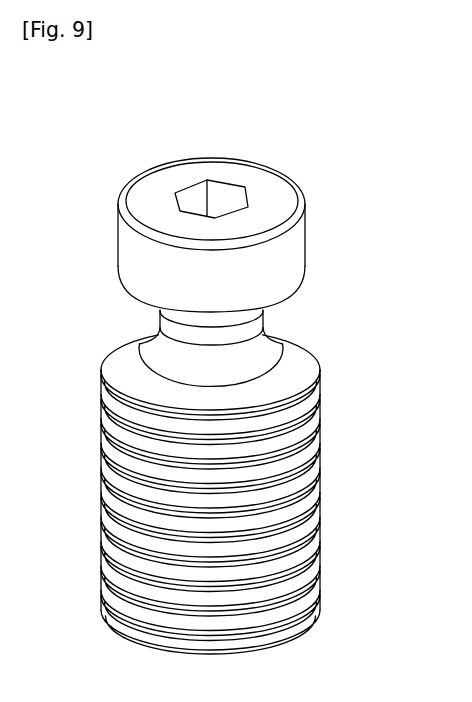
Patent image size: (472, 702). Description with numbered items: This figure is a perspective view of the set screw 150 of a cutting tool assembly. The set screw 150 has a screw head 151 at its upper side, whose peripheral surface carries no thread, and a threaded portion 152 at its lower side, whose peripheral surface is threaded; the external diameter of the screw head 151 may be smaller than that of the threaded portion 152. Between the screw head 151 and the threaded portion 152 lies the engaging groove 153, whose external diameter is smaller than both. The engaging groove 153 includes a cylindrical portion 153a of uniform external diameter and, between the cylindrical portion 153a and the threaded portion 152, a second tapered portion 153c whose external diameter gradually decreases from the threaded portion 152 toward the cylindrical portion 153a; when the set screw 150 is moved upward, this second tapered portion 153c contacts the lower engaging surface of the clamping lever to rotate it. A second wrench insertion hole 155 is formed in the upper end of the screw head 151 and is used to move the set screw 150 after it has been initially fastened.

The set screw 150 is at (345, 146).
The screw head 151 is at (260, 216).
The threaded portion 152 is at (334, 472).
The engaging groove 153 is at (284, 318).
The cylindrical portion 153a is at (152, 342).
The second tapered portion 153c is at (295, 369).
The second wrench insertion hole 155 is at (222, 196).